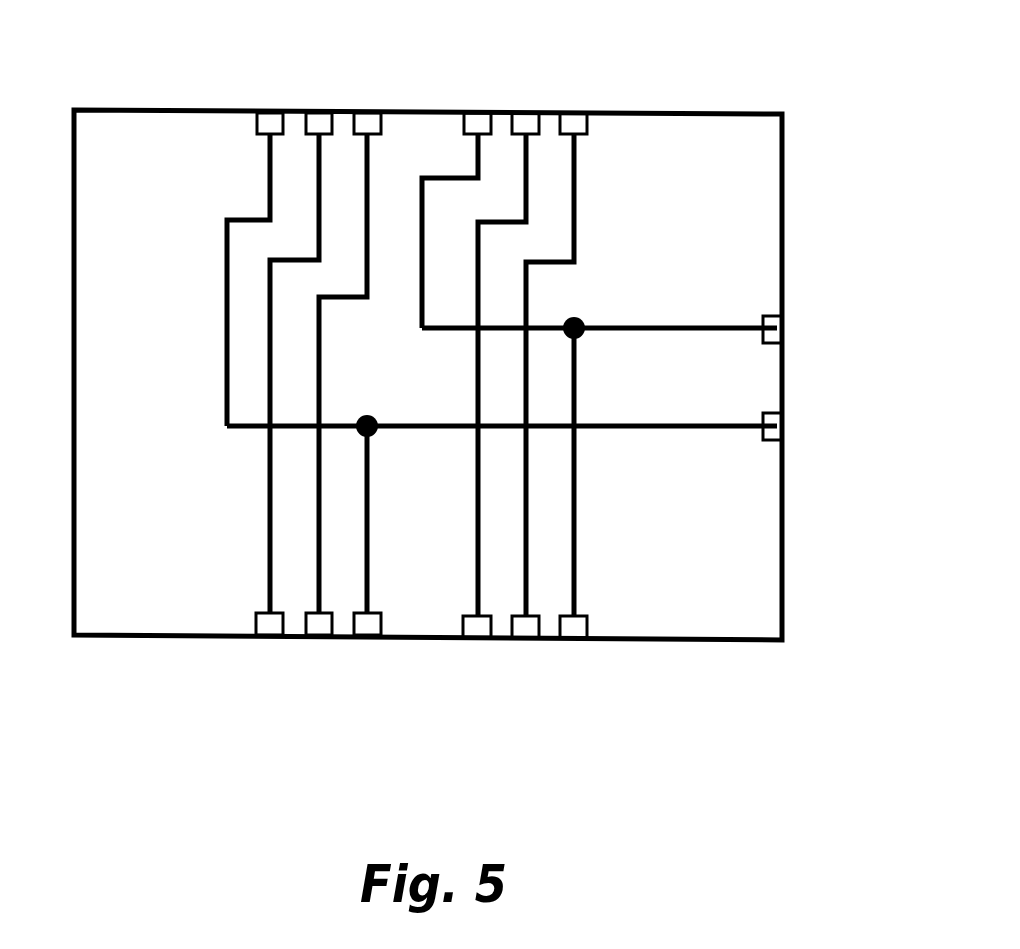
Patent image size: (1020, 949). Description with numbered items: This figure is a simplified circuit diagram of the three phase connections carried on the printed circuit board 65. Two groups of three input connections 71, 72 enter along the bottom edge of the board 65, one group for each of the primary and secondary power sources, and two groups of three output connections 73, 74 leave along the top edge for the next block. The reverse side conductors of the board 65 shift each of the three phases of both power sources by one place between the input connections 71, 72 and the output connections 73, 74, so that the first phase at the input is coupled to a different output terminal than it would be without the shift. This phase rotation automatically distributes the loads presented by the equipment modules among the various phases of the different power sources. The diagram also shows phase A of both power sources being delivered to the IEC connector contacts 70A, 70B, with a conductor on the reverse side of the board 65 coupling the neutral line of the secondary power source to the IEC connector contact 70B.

The board 65 is at (750, 188).
The IEC connector contact 70A is at (777, 426).
The IEC connector contact 70B is at (777, 328).
The input connections 71 is at (595, 657).
The input connections 72 is at (385, 655).
The output connections 73 is at (588, 88).
The output connections 74 is at (387, 87).